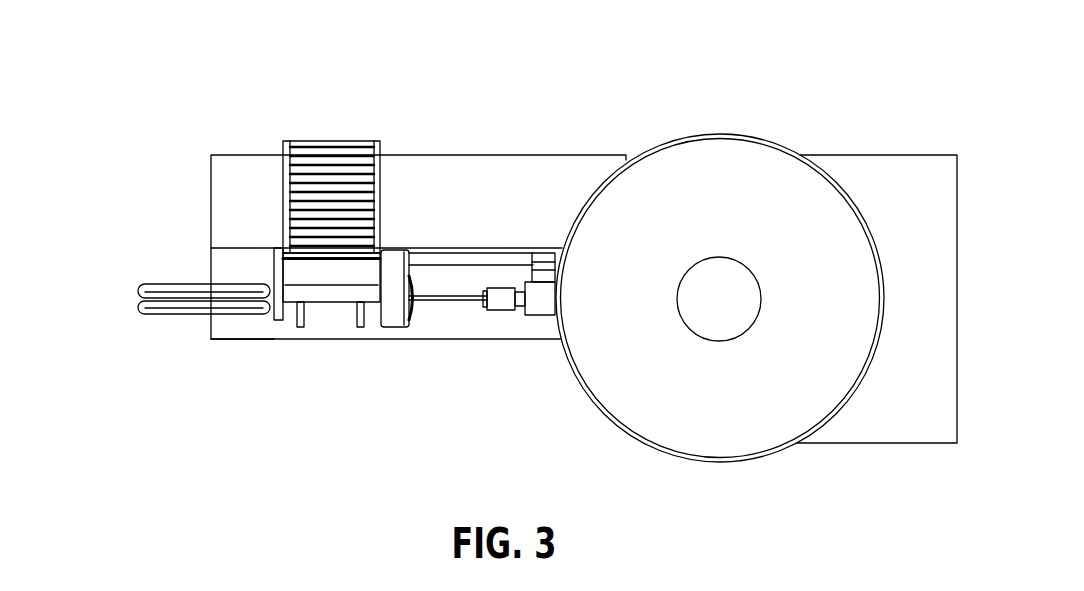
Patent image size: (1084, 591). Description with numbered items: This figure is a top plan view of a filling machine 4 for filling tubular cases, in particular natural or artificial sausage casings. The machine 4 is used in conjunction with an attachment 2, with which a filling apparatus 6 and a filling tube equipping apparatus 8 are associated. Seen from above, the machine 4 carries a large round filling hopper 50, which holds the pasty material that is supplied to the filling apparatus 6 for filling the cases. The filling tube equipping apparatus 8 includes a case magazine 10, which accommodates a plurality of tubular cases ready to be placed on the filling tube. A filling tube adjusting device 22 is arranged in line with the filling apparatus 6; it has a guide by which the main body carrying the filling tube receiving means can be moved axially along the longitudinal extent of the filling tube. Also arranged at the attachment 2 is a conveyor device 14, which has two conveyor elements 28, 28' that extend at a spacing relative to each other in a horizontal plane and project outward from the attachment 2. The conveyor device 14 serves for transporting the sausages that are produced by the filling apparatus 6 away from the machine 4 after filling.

The attachment 2 is at (162, 125).
The filling machine 4 is at (850, 140).
The filling apparatus 6 is at (463, 308).
The filling tube equipping apparatus 8 is at (390, 350).
The case magazine 10 is at (327, 135).
The conveyor device 14 is at (190, 320).
The filling tube adjusting device 22 is at (532, 320).
The conveyor element 28 is at (166, 246).
The conveyor element 28' is at (154, 349).
The filling hopper 50 is at (707, 180).